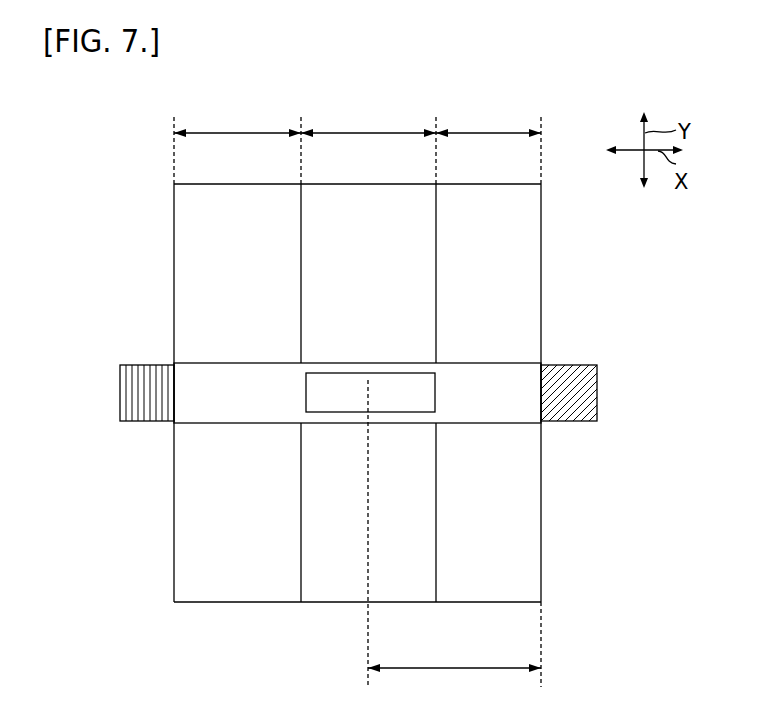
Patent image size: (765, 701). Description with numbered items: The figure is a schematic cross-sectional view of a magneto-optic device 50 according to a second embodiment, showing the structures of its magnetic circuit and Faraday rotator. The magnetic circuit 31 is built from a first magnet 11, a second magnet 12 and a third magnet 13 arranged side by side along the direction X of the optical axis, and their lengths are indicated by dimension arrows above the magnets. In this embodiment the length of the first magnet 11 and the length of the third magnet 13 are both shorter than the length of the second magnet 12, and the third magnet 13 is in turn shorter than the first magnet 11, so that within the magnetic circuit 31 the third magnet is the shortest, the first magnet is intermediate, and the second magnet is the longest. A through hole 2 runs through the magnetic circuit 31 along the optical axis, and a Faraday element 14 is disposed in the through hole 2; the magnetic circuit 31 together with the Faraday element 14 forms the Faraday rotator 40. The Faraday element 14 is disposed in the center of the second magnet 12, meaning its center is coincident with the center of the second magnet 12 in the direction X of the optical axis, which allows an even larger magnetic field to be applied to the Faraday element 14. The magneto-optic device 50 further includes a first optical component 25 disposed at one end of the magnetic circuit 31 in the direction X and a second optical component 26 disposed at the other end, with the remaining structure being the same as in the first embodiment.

The magneto-optic device 50 is at (128, 154).
The Faraday rotator 40 is at (547, 258).
The magnetic circuit 31 is at (193, 607).
The first magnet 11 is at (248, 603).
The second magnet 12 is at (301, 515).
The third magnet 13 is at (485, 603).
The through hole 2 is at (200, 362).
The Faraday element 14 is at (435, 373).
The first optical component 25 is at (120, 395).
The second optical component 26 is at (597, 393).